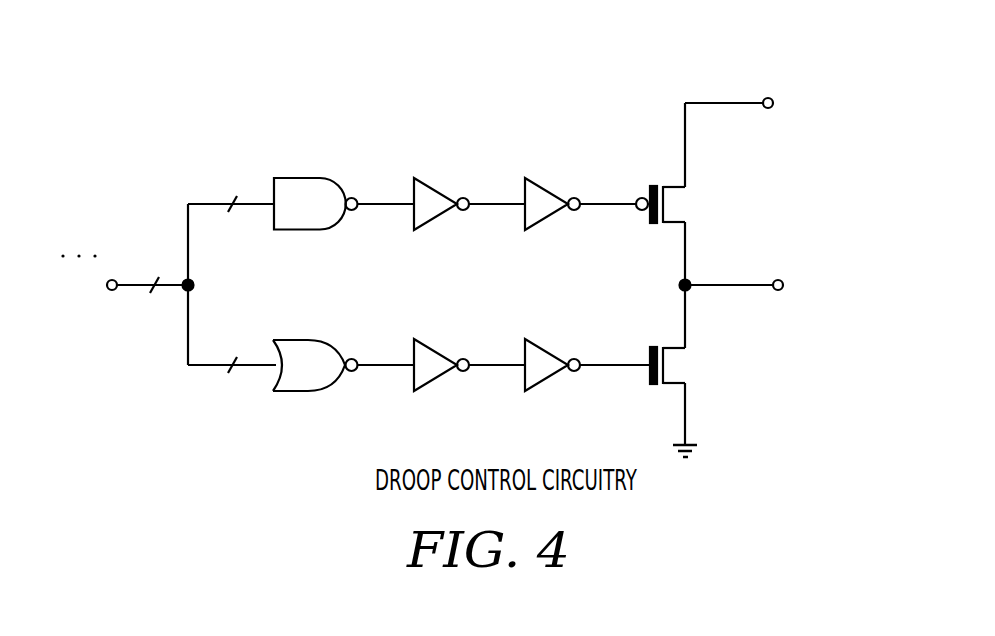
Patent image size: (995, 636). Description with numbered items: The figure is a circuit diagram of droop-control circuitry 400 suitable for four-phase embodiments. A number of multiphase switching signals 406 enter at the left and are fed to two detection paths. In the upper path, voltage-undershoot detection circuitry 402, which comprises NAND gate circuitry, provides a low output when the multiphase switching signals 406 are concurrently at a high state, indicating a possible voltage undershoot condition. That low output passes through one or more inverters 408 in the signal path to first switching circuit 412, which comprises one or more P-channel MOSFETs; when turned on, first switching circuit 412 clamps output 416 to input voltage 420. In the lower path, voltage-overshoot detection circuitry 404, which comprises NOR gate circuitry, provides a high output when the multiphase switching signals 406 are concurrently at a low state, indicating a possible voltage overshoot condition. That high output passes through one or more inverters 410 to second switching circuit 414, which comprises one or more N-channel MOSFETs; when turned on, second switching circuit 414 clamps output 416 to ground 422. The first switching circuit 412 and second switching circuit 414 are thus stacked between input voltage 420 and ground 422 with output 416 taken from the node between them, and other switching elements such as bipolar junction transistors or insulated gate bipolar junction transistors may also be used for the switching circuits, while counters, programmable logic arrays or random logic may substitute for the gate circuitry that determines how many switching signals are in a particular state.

The droop-control circuitry 400 is at (858, 50).
The voltage-undershoot detection circuitry 402 is at (303, 177).
The voltage-overshoot detection circuitry 404 is at (307, 392).
The multiphase switching signals 406 is at (128, 291).
The inverters 408 is at (507, 130).
The inverters 410 is at (511, 307).
The first switching circuit 412 is at (668, 204).
The second switching circuit 414 is at (668, 365).
The output 416 is at (778, 280).
The input voltage 420 is at (773, 103).
The ground 422 is at (700, 445).